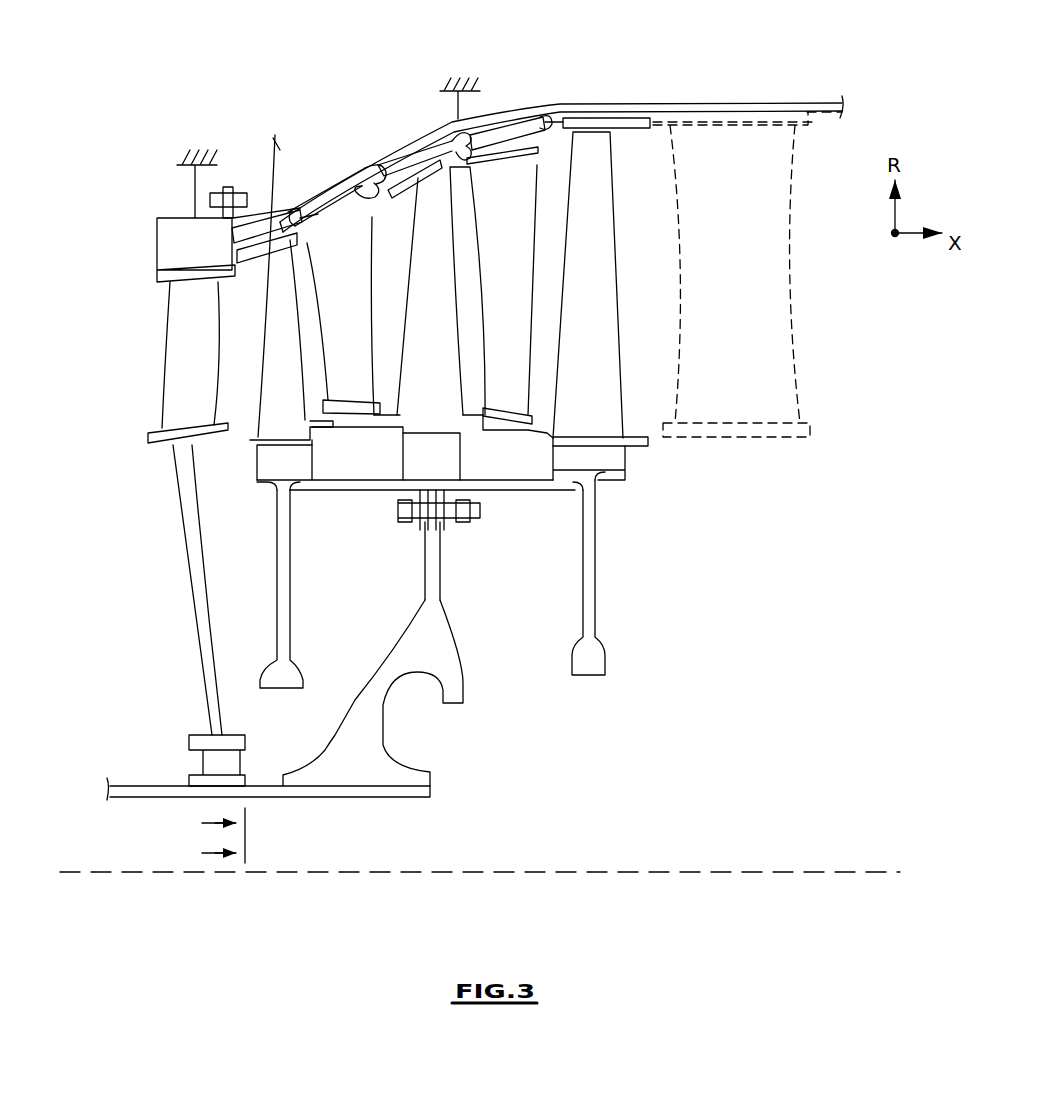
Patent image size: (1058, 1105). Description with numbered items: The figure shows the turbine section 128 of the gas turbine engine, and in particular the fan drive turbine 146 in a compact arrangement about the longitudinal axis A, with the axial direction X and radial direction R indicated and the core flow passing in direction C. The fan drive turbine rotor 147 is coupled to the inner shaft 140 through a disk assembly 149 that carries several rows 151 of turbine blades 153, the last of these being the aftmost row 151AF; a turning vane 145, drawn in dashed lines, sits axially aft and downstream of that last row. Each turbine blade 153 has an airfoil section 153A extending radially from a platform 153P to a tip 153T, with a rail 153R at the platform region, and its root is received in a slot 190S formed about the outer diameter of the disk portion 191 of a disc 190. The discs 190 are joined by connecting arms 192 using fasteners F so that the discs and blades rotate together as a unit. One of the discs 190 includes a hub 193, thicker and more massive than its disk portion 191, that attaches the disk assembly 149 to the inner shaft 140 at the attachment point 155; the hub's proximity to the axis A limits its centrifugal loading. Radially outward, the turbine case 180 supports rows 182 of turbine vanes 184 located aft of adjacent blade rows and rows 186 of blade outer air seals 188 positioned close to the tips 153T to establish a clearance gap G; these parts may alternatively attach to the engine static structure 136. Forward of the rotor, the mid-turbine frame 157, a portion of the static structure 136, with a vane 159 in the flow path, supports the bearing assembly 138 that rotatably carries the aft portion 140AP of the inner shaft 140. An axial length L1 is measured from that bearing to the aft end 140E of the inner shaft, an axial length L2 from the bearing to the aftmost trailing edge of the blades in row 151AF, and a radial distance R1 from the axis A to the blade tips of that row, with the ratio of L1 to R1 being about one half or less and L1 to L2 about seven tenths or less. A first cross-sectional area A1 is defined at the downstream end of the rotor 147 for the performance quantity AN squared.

The turbine section 128 is at (108, 115).
The engine static structure 136 is at (186, 153).
The bearing assembly 138 is at (197, 736).
The inner shaft 140 is at (143, 788).
The aft portion of the inner shaft 140AP is at (270, 790).
The aft end of the inner shaft 140E is at (430, 792).
The turning vane 145 is at (790, 280).
The fan drive turbine 146 is at (222, 90).
The fan drive turbine rotor 147 is at (622, 224).
The disk assembly 149 is at (462, 624).
The row of turbine blades 151 is at (260, 268).
The aftmost row of turbine blades 151AF is at (632, 185).
The turbine blade 153 is at (283, 340).
The airfoil section 153A is at (293, 390).
The platform 153P is at (240, 440).
The rail 153R is at (262, 485).
The tip 153T is at (655, 50).
The attachment point 155 is at (372, 812).
The mid-turbine frame 157 is at (160, 215).
The front vane 159 is at (172, 383).
The turbine case 180 is at (507, 113).
The row of turbine vanes 182 is at (338, 148).
The turbine vane 184 is at (345, 255).
The row of blade outer air seals 186 is at (288, 143).
The blade outer air seal 188 is at (283, 230).
The disc 190 is at (290, 600).
The slot 190S is at (296, 472).
The disk portion 191 is at (278, 575).
The connecting arm 192 is at (367, 493).
The hub 193 is at (383, 745).
The longitudinal axis A is at (845, 872).
The first cross-sectional area A1 is at (655, 437).
The core flow path C is at (238, 320).
The fastener F is at (388, 507).
The clearance gap G is at (635, 148).
The radial distance R1 is at (655, 110).
The axial length L1 is at (440, 822).
The axial length L2 is at (653, 905).